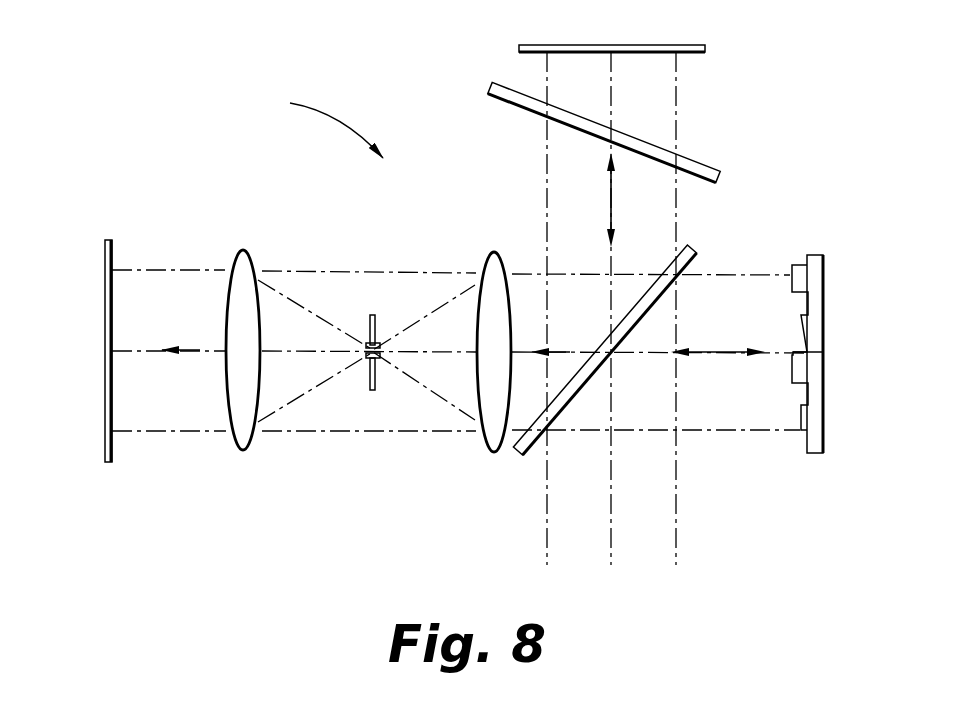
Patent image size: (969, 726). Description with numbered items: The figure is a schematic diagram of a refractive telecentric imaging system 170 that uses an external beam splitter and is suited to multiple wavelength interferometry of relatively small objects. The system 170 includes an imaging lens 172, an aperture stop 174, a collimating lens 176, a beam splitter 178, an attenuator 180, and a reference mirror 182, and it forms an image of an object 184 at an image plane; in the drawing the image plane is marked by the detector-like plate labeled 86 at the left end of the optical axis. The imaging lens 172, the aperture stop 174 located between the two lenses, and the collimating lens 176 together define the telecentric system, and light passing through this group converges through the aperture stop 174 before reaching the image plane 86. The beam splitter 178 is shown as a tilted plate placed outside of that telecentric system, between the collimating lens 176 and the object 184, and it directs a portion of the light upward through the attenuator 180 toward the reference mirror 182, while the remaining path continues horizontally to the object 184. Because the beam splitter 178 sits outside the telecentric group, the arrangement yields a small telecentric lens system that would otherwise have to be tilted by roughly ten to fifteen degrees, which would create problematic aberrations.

The detector 86 is at (107, 322).
The system 170 is at (314, 124).
The imaging lens 172 is at (243, 452).
The aperture stop 174 is at (376, 330).
The collimating lens 176 is at (494, 455).
The beam splitter 178 is at (697, 245).
The attenuator 180 is at (722, 178).
The reference mirror 182 is at (693, 52).
The object 184 is at (823, 338).